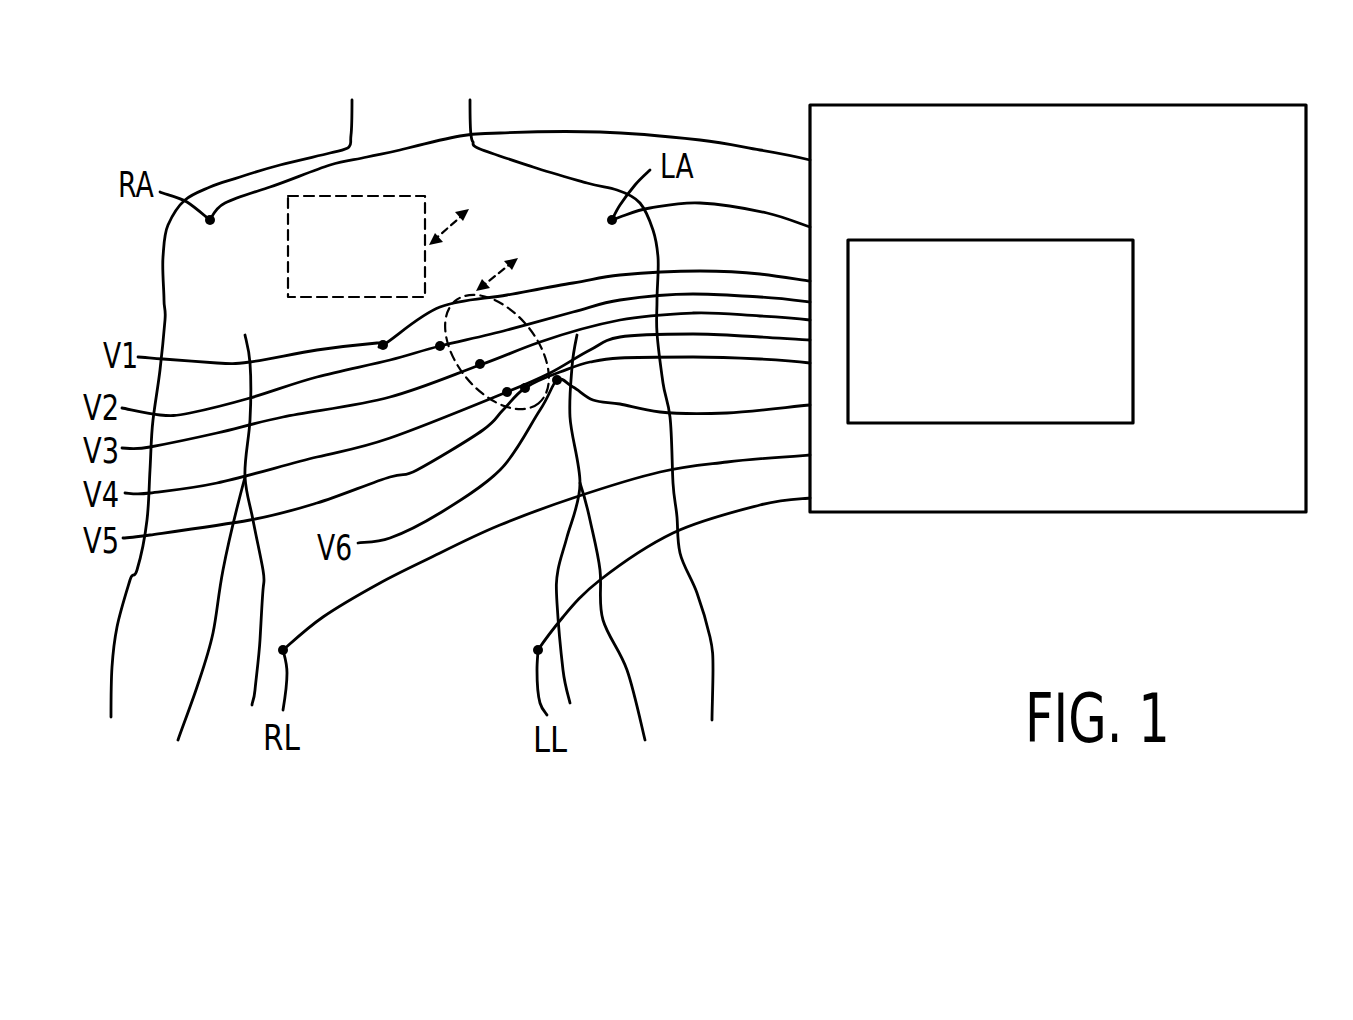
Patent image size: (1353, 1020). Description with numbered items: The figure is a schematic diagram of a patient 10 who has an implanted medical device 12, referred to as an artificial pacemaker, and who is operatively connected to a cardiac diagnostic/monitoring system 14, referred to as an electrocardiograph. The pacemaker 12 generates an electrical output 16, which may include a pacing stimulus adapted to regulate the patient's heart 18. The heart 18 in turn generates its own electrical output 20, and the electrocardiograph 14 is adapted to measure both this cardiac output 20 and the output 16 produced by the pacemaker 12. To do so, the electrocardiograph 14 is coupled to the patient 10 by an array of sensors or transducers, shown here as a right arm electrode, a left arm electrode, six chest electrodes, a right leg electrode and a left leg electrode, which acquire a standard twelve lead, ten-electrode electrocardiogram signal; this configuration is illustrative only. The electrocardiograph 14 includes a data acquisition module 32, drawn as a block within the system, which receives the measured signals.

The patient 10 is at (108, 663).
The implanted medical device 12 is at (314, 248).
The cardiac diagnostic/monitoring system 14 is at (1057, 104).
The electrical output 16 is at (443, 216).
The heart 18 is at (508, 416).
The electrical output 20 is at (482, 288).
The data acquisition module 32 is at (992, 423).